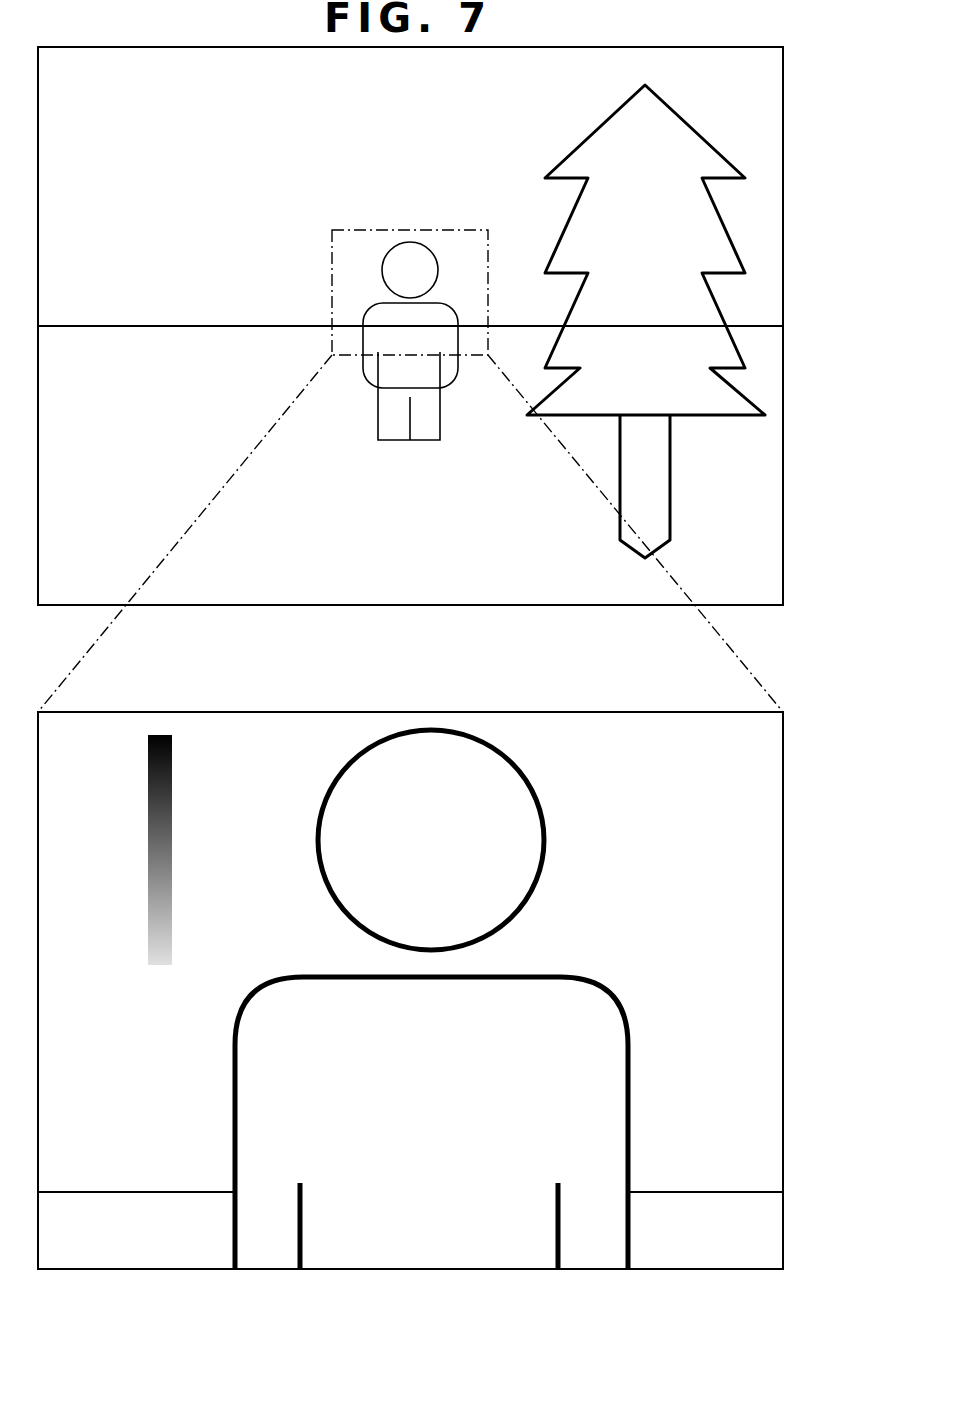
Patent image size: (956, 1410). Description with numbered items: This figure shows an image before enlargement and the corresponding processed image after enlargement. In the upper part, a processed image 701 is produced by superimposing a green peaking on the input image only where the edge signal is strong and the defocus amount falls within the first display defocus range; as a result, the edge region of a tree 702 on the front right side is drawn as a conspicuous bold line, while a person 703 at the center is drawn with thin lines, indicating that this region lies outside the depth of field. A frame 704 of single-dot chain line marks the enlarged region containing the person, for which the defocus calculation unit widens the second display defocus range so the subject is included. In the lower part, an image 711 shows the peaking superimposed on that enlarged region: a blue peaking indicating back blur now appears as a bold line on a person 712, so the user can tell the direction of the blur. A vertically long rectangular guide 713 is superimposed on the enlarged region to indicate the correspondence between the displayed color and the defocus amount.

The processed image 701 is at (783, 180).
The tree 702 is at (585, 140).
The person 703 is at (412, 242).
The frame 704 is at (332, 259).
The image 711 is at (783, 853).
The person 712 is at (592, 983).
The guide 713 is at (172, 783).